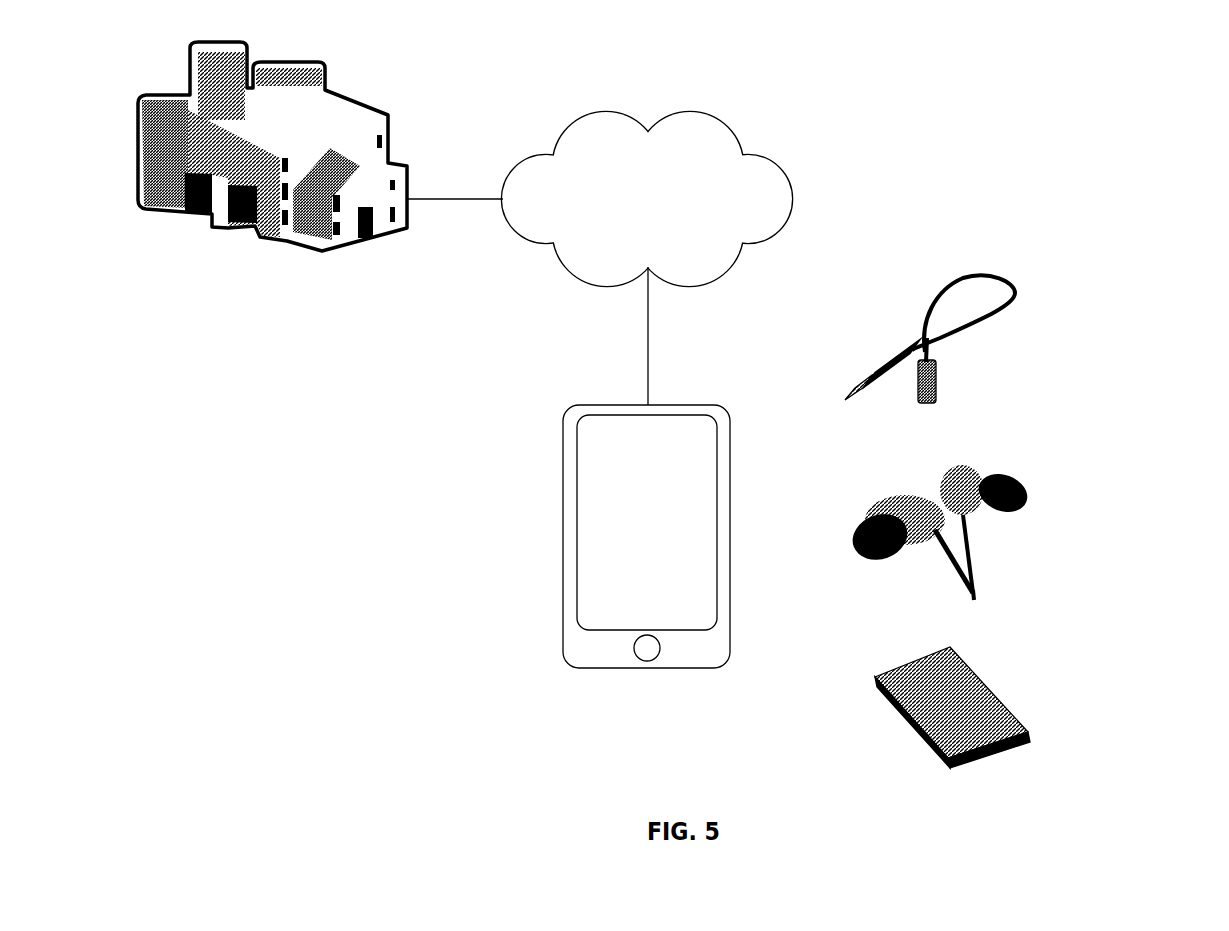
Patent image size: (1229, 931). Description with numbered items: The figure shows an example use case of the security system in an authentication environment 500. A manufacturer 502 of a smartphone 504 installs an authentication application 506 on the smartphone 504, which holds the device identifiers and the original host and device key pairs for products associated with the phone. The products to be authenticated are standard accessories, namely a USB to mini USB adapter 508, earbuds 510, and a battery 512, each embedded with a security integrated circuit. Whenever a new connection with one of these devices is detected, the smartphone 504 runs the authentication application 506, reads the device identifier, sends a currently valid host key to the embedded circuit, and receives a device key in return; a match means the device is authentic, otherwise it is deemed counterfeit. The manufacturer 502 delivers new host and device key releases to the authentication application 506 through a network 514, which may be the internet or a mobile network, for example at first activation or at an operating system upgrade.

The authentication environment 500 is at (1132, 84).
The manufacturer 502 is at (390, 115).
The smartphone 504 is at (563, 450).
The authentication application 506 is at (590, 528).
The USB to mini USB adapter 508 is at (1015, 293).
The earbuds 510 is at (975, 581).
The battery 512 is at (1000, 695).
The network 514 is at (793, 199).